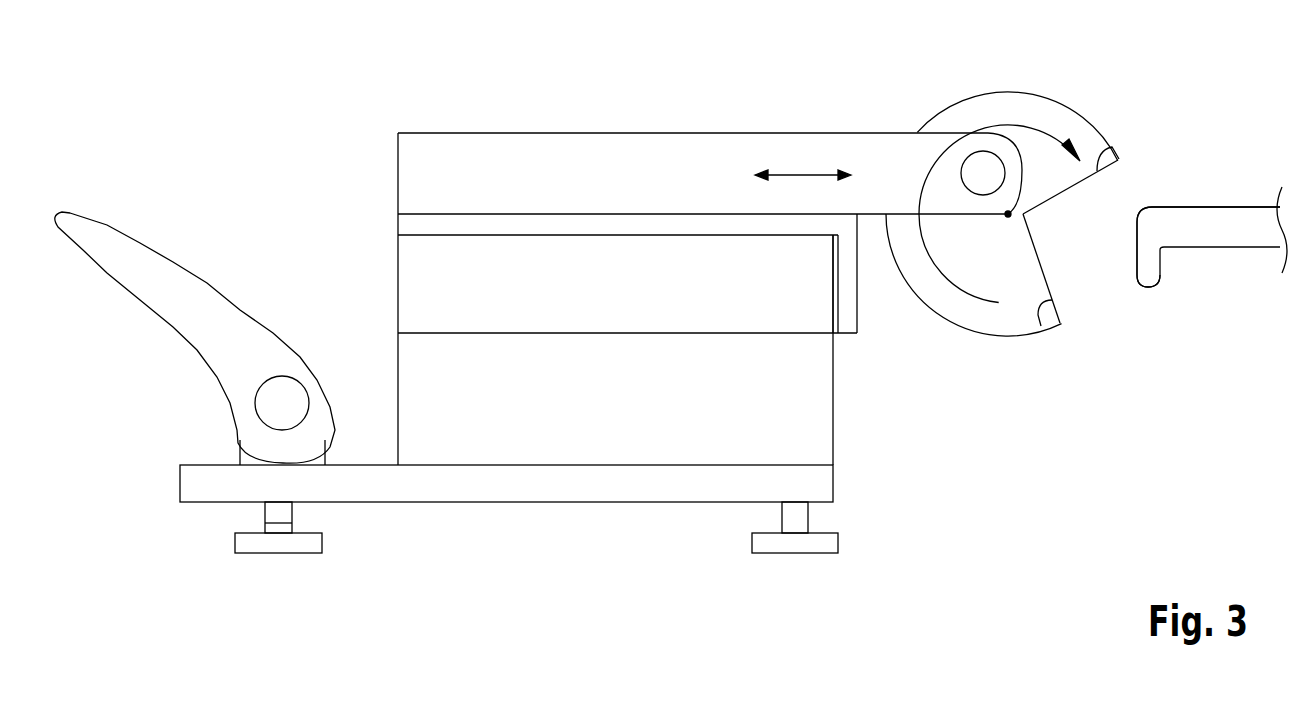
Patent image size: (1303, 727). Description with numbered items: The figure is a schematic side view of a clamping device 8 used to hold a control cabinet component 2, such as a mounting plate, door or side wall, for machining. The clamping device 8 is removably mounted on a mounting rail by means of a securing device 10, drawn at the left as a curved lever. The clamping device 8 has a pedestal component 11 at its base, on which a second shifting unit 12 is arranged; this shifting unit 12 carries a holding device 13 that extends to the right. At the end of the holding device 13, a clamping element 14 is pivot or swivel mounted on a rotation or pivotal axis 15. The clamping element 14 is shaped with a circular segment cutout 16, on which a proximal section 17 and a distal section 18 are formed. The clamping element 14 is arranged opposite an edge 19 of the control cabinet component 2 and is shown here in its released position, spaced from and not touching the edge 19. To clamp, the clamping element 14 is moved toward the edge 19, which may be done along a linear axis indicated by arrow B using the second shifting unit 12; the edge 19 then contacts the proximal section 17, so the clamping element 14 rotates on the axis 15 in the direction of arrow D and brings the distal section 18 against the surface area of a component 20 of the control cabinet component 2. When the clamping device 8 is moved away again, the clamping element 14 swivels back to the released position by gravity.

The control cabinet component 2 is at (1210, 233).
The clamping device 8 is at (453, 164).
The securing device 10 is at (234, 370).
The pedestal component 11 is at (562, 437).
The second shifting unit 12 is at (423, 282).
The holding device 13 is at (603, 164).
The clamping element 14 is at (1053, 114).
The rotation or pivotal axis 15 is at (983, 170).
The circular segment cutout 16 is at (1058, 263).
The proximal section 17 is at (1043, 327).
The distal section 18 is at (1112, 148).
The edge 19 is at (1147, 205).
The component 20 is at (1222, 205).
The linear axis arrow B is at (805, 173).
The rotation arrow D is at (1015, 123).